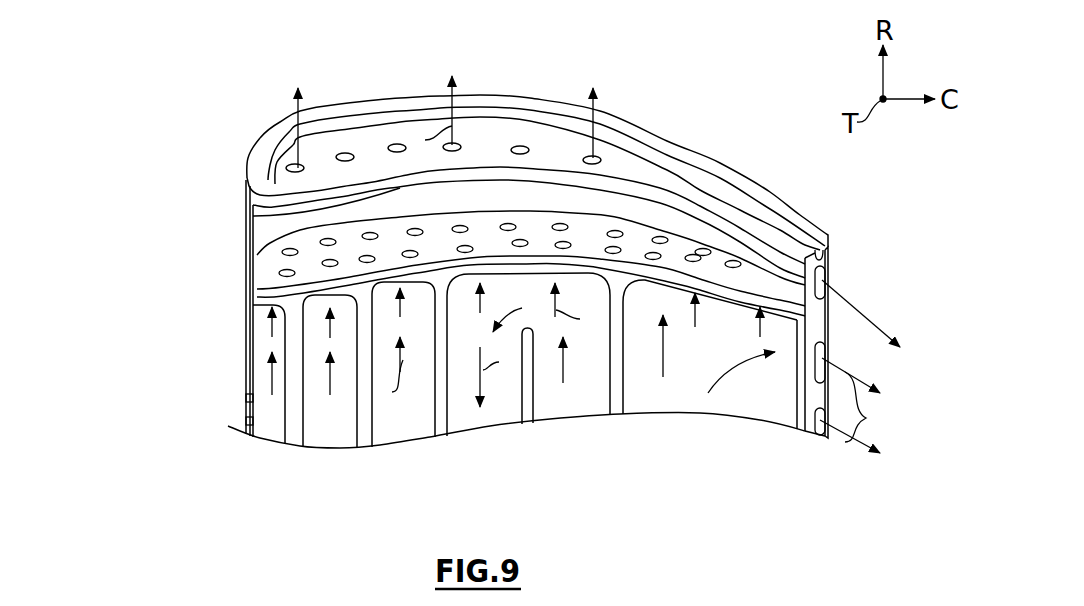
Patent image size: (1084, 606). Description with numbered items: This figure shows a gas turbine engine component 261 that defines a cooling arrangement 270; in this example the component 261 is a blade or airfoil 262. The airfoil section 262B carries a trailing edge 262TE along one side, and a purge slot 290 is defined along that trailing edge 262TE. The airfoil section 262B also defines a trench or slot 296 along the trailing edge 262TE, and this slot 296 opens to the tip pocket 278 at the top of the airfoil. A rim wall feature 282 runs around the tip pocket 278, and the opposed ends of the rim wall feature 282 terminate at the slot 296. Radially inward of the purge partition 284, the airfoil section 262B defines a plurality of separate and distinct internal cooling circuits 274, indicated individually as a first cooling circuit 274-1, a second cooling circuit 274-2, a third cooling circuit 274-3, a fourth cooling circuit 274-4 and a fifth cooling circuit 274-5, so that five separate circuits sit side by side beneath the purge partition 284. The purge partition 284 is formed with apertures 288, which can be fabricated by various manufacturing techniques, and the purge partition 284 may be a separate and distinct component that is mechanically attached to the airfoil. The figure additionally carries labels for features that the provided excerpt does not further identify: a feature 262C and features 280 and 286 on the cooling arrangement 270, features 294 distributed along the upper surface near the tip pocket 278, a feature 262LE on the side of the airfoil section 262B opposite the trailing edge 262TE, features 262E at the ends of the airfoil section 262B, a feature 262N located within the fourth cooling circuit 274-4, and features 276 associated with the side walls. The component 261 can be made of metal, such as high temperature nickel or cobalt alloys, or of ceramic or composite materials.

The gas turbine engine component 261 is at (190, 70).
The blade or airfoil 262 is at (540, 265).
The cooling arrangement 270 is at (330, 60).
The cover surface 262C is at (563, 115).
The tip pocket 278 is at (626, 138).
The outer surface 280 is at (372, 140).
The rim wall feature 282 is at (274, 142).
The purge partition 284 is at (262, 263).
The front face 286 is at (273, 216).
The apertures 288 is at (500, 224).
The film cooling holes 294 is at (520, 148).
The airfoil section 262B is at (243, 338).
The leading edge 262LE is at (247, 372).
The trailing edge 262TE is at (825, 320).
The end wall 262E is at (250, 428).
The nub 262N is at (537, 398).
The internal cooling circuits 274 is at (470, 418).
The internal cooling circuit 274-1 is at (277, 440).
The internal cooling circuit 274-2 is at (315, 440).
The internal cooling circuit 274-3 is at (405, 428).
The internal cooling circuit 274-4 is at (528, 364).
The internal cooling circuit 274-5 is at (666, 442).
The cooling holes 276 is at (247, 406).
The purge slot 290 is at (824, 285).
The trench or slot 296 is at (828, 250).